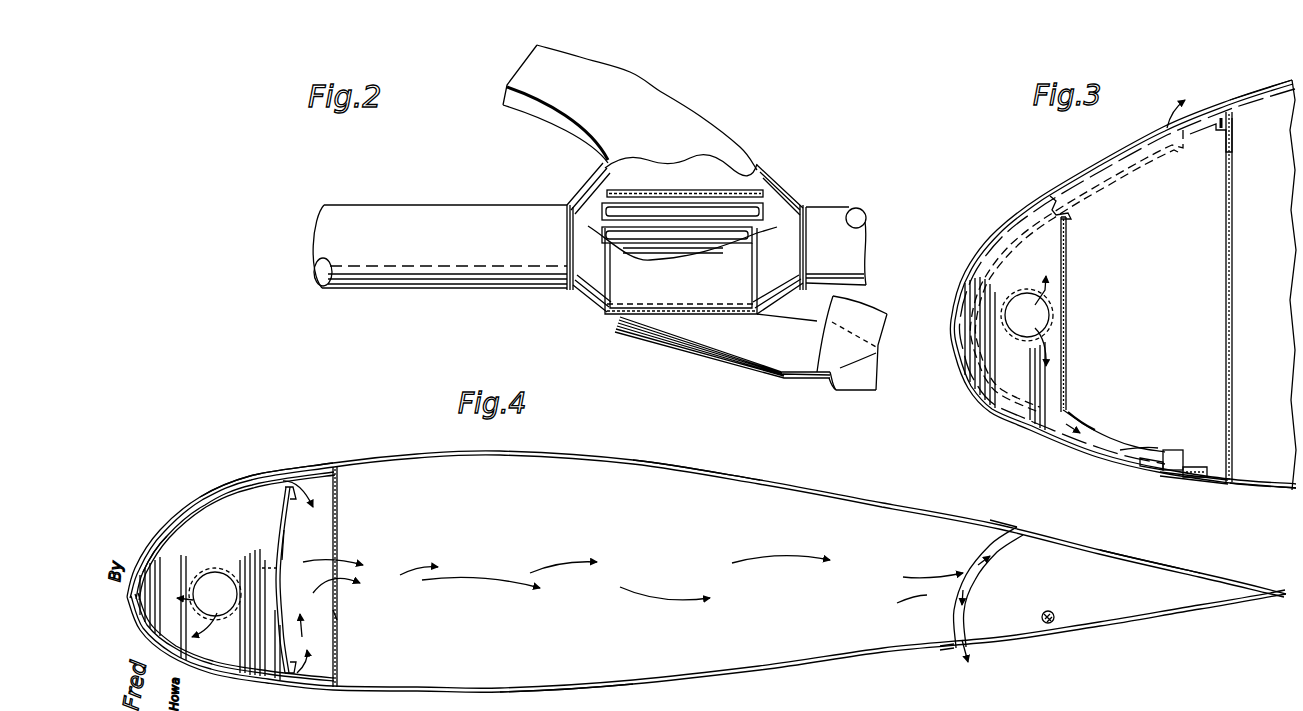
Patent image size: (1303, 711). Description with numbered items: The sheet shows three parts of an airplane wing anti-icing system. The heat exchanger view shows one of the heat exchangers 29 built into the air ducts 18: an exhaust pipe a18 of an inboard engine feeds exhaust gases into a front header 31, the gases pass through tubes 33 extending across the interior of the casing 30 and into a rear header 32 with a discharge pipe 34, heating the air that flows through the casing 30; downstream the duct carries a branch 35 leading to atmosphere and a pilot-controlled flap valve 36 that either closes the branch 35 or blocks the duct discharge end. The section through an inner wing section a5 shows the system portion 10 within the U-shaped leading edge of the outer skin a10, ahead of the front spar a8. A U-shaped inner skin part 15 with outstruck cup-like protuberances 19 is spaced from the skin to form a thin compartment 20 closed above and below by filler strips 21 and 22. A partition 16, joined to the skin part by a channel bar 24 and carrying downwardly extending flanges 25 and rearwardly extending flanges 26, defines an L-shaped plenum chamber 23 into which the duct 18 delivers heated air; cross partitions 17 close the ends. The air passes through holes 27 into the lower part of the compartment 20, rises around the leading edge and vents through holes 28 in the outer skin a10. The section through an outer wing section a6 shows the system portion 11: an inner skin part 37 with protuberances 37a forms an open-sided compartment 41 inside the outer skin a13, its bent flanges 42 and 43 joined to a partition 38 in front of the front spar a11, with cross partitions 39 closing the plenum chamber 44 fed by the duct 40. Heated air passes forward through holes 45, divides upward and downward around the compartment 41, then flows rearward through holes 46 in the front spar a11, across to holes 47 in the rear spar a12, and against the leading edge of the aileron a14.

In FIG. 3, the system portions 10 is at (1069, 261).
In FIG. 4, the system portions 11 is at (212, 508).
In FIG. 3, the inner skin parts 15 is at (1099, 178).
In FIG. 3, the longitudinally extending partitions 16 is at (1068, 331).
In FIG. 3, the cross partitions 17 is at (1052, 350).
In FIG. 2, the air ducts 18 is at (703, 128).
In FIG. 3, the air ducts 18 is at (1036, 304).
In FIG. 3, the cup-like protuberances 19 is at (1007, 230).
In FIG. 3, the compartments 20 is at (986, 251).
In FIG. 3, the filler strips 21 is at (1206, 110).
In FIG. 3, the filler strips 22 is at (1191, 481).
In FIG. 3, the plenum chambers 23 is at (1103, 442).
In FIG. 3, the channel bars 24 is at (1060, 195).
In FIG. 3, the downwardly extending flanges 25 is at (1172, 450).
In FIG. 3, the rearwardly extending flanges 26 is at (1184, 464).
In FIG. 3, the holes 27 is at (1153, 470).
In FIG. 3, the holes 28 is at (1163, 127).
In FIG. 2, the heat exchangers 29 is at (618, 318).
In FIG. 2, the casings 30 is at (681, 271).
In FIG. 2, the front headers 31 is at (578, 199).
In FIG. 2, the rear headers 32 is at (777, 188).
In FIG. 2, the tubes 33 is at (664, 226).
In FIG. 2, the discharge pipes 34 is at (853, 211).
In FIG. 2, the branches 35 is at (879, 373).
In FIG. 2, the flap valves 36 is at (838, 387).
In FIG. 4, the inner skin parts 37 is at (173, 528).
In FIG. 4, the cup-like protuberances 37a is at (155, 546).
In FIG. 4, the longitudinally extending partitions 38 is at (289, 539).
In FIG. 4, the cross partitions 39 is at (262, 568).
In FIG. 4, the air ducts 40 is at (238, 603).
In FIG. 4, the compartments 41 is at (146, 558).
In FIG. 4, the flanges 42 is at (336, 486).
In FIG. 4, the flanges 43 is at (298, 677).
In FIG. 4, the plenum chambers 44 is at (230, 610).
In FIG. 4, the holes 45 is at (134, 607).
In FIG. 4, the holes 46 is at (340, 558).
In FIG. 4, the holes 47 is at (967, 570).
In FIG. 3, the inner sections a5 is at (1250, 88).
In FIG. 4, the outer sections a6 is at (731, 478).
In FIG. 3, the front longitudinally extending spars a8 is at (1225, 245).
In FIG. 3, the outer skins a10 is at (1263, 487).
In FIG. 4, the front longitudinally extending spars a11 is at (285, 527).
In FIG. 4, the rear longitudinally extending spars a12 is at (980, 547).
In FIG. 4, the outer skins a13 is at (253, 473).
In FIG. 4, the ailerons a14 is at (1207, 560).
In FIG. 2, the exhaust pipes a18 is at (474, 276).